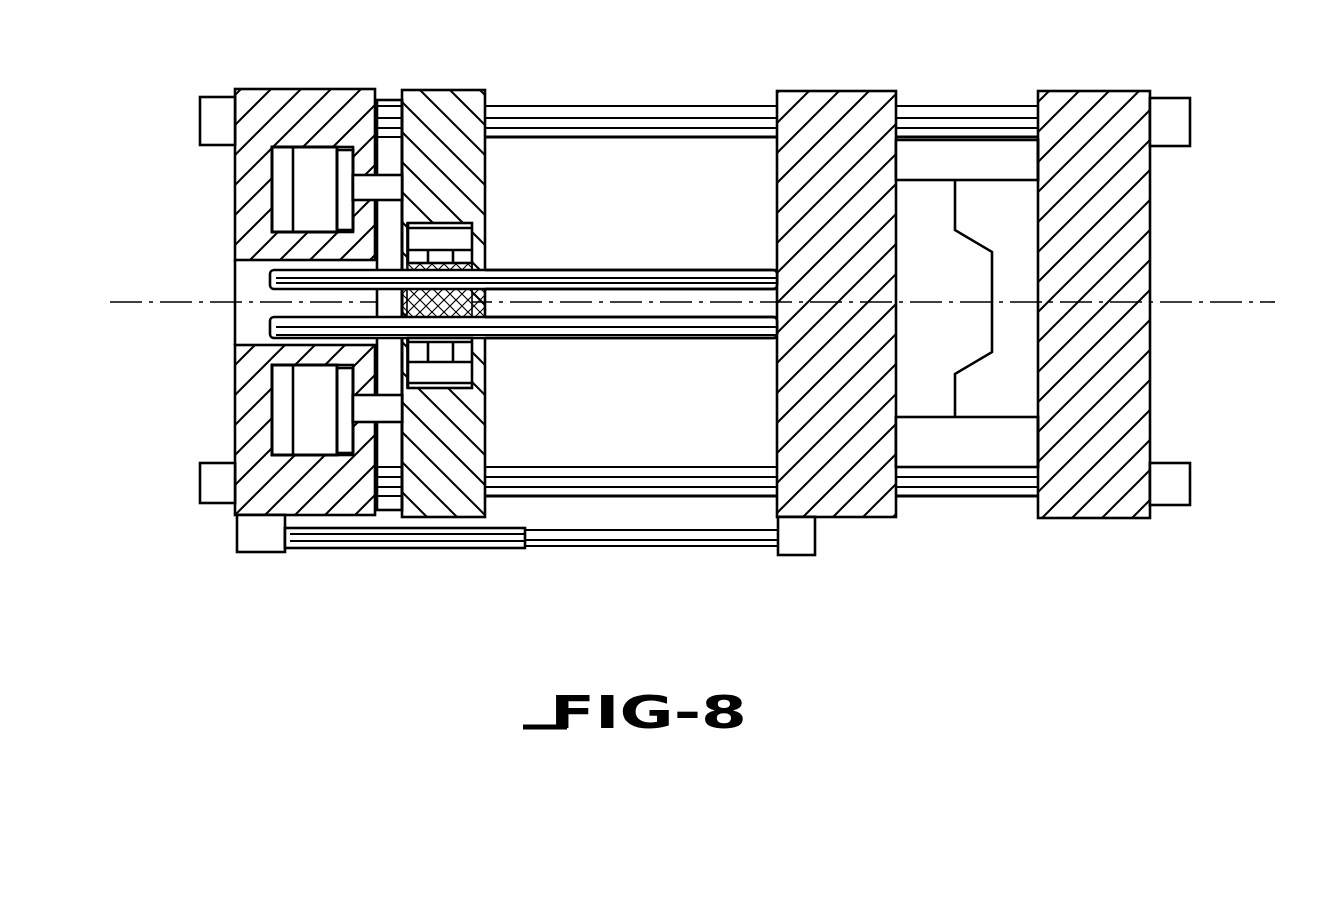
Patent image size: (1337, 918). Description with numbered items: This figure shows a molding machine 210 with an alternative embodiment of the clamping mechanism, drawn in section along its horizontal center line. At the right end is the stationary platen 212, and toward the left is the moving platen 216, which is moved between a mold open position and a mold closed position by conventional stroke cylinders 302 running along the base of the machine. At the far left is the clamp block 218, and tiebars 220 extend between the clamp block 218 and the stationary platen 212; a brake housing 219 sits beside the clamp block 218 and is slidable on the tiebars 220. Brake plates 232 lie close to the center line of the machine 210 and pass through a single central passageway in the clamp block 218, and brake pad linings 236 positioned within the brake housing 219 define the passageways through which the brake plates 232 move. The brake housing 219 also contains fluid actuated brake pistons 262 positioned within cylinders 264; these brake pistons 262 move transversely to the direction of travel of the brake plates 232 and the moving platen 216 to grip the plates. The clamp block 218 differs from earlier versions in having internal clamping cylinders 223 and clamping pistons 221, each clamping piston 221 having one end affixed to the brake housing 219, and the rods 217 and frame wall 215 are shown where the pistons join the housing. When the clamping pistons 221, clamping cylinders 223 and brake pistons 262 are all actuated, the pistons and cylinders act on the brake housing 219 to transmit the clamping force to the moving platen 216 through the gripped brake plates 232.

The molding machine 210 is at (557, 556).
The stationary platen 212 is at (1130, 252).
The frame 215 is at (250, 282).
The moving platen 216 is at (832, 110).
The piston rods 217 is at (503, 269).
The clamp block 218 is at (314, 105).
The brake housing 219 is at (438, 108).
The tiebars 220 is at (583, 112).
The clamping pistons 221 is at (308, 193).
The clamping cylinders 223 is at (280, 170).
The brake plates 232 is at (733, 275).
The brake pad linings 236 is at (462, 239).
The brake pistons 262 is at (480, 232).
The cylinders 264 is at (448, 390).
The stroke cylinders 302 is at (322, 549).